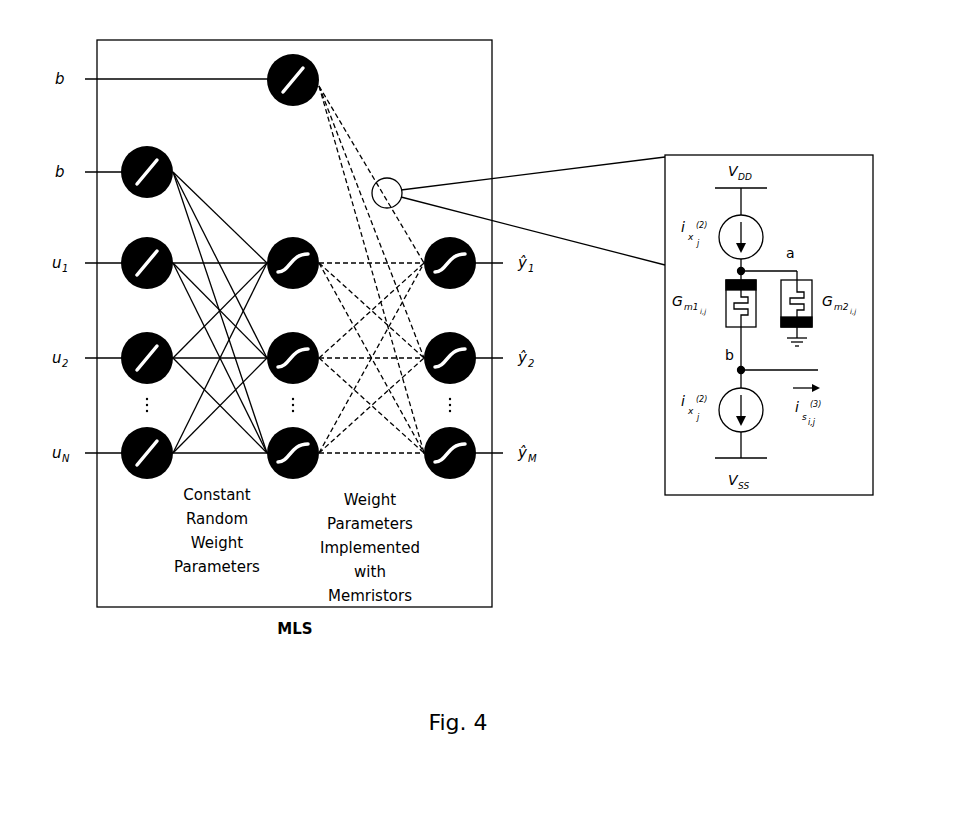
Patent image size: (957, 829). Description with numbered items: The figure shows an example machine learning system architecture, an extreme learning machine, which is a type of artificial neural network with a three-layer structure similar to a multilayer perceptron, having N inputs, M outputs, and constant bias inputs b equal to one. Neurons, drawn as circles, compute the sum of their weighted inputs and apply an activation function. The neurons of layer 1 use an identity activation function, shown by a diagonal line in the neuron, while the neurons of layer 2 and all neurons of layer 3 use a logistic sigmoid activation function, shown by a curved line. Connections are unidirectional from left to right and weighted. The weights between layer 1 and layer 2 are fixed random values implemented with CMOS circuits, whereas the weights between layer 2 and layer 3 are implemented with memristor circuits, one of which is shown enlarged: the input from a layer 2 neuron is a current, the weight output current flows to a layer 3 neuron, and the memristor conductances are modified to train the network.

The layer 1 is at (148, 246).
The layer 2 is at (299, 246).
The layer 3 is at (448, 246).